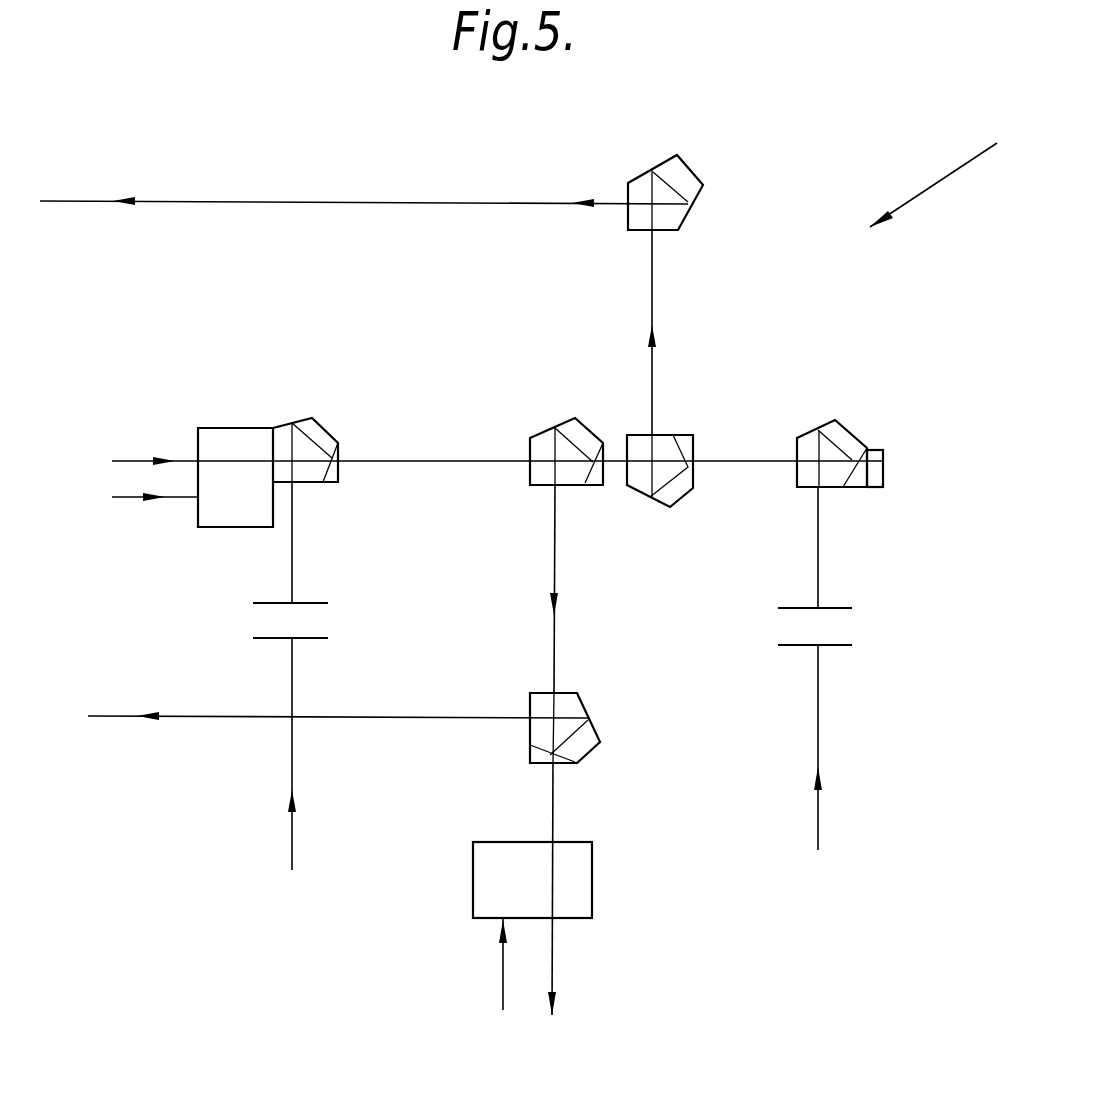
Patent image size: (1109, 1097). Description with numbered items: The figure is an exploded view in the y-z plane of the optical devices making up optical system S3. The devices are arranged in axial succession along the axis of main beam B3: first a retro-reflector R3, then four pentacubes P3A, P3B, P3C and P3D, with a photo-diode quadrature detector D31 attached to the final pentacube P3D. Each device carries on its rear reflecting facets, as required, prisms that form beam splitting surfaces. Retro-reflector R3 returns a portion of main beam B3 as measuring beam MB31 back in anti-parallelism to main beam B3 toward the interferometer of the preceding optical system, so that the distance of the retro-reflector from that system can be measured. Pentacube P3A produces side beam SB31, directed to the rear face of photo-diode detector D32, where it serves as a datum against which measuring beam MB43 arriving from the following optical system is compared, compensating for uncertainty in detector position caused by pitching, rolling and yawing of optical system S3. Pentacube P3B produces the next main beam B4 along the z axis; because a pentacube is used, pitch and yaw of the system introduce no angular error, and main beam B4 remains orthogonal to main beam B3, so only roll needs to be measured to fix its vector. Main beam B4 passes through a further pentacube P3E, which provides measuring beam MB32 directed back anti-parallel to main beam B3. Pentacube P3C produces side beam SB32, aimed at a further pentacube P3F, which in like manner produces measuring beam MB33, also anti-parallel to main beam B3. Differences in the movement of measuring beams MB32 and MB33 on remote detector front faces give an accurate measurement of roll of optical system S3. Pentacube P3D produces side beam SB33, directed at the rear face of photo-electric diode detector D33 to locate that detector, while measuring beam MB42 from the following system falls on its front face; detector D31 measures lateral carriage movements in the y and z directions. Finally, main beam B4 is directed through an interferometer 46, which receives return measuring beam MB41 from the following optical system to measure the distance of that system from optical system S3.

The main beam B3 is at (132, 456).
The measuring beam MB31 is at (151, 500).
The retro-reflector R3 is at (198, 528).
The pentacube P3A is at (312, 418).
The pentacube P3B is at (575, 418).
The pentacube P3C is at (693, 433).
The pentacube P3D is at (835, 420).
The pentacube P3E is at (577, 693).
The pentacube P3F is at (703, 188).
The photo-diode quadrature detector D31 is at (883, 452).
The photo-diode detector D32 is at (255, 615).
The photo-electric diode detector D33 is at (845, 627).
The measuring beam MB33 is at (344, 204).
The measuring beam MB32 is at (412, 700).
The return measuring beam MB41 is at (503, 983).
The measuring beam MB42 is at (818, 722).
The measuring beam MB43 is at (243, 754).
The side beam SB31 is at (292, 568).
The side beam SB32 is at (652, 313).
The side beam SB33 is at (818, 567).
The main beam B4 is at (555, 560).
The optical system S3 is at (936, 180).
The interferometer 46 is at (480, 873).